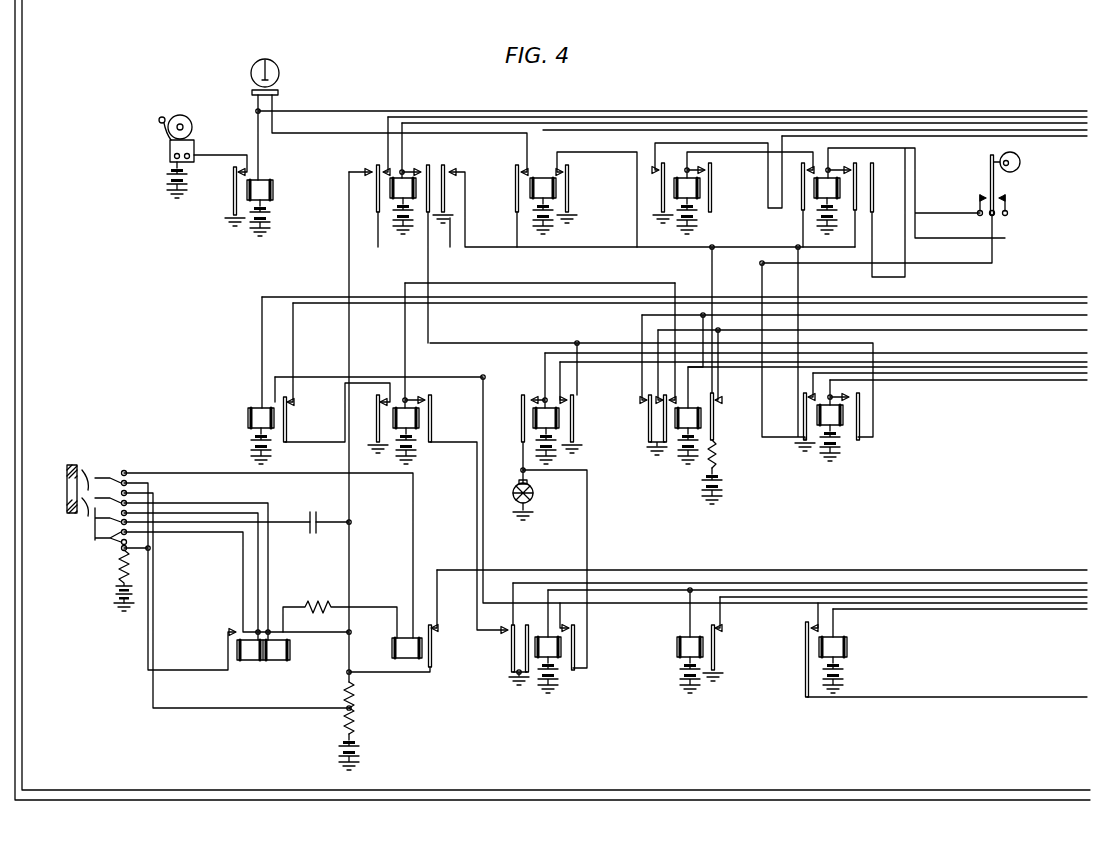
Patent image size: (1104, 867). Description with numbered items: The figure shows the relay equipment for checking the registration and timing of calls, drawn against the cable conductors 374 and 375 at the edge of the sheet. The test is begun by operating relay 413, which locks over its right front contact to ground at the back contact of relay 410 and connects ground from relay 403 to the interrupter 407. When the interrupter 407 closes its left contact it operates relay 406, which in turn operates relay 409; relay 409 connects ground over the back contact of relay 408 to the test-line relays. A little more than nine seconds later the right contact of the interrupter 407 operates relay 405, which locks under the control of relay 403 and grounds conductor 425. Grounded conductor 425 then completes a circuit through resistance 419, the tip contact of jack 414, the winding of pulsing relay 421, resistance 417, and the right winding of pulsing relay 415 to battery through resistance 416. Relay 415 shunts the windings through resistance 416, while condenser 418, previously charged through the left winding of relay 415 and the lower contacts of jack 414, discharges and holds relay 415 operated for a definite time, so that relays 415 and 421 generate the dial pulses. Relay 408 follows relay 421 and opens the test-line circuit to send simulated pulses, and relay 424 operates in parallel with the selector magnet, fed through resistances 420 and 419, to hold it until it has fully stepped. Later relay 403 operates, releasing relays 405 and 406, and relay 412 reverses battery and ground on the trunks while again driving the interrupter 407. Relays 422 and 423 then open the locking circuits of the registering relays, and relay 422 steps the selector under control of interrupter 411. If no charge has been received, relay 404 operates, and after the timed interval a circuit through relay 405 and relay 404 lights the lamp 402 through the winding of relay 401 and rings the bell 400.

The cable conductor 374 is at (22, 59).
The cable conductor 375 is at (15, 80).
The bell 400 is at (188, 112).
The relay 401 is at (273, 190).
The lamp 402 is at (280, 78).
The relay 403 is at (416, 188).
The relay 404 is at (556, 188).
The relay 405 is at (700, 188).
The relay 406 is at (840, 188).
The interrupter 407 is at (993, 184).
The relay 408 is at (274, 418).
The relay 409 is at (419, 418).
The relay 410 is at (559, 418).
The interrupter 411 is at (534, 493).
The relay 412 is at (701, 418).
The relay 413 is at (843, 415).
The jack 414 is at (82, 482).
The pulsing relay 415 is at (290, 650).
The resistance 416 is at (117, 567).
The resistance 417 is at (312, 603).
The condenser 418 is at (330, 498).
The resistance 419 is at (363, 693).
The resistance 420 is at (358, 729).
The pulsing relay 421 is at (422, 648).
The relay 422 is at (561, 647).
The relay 423 is at (703, 647).
The relay 424 is at (847, 647).
The conductor 425 is at (347, 263).